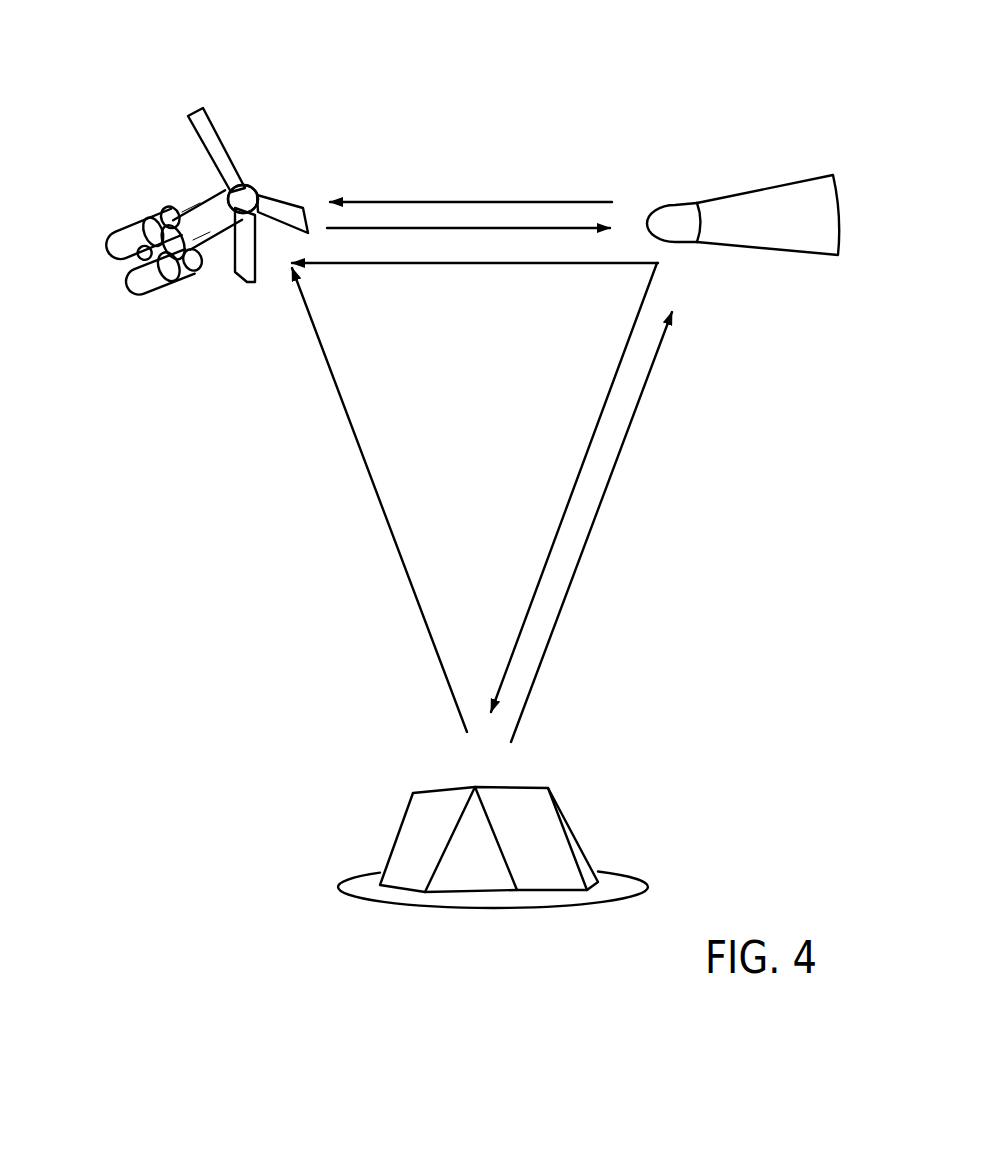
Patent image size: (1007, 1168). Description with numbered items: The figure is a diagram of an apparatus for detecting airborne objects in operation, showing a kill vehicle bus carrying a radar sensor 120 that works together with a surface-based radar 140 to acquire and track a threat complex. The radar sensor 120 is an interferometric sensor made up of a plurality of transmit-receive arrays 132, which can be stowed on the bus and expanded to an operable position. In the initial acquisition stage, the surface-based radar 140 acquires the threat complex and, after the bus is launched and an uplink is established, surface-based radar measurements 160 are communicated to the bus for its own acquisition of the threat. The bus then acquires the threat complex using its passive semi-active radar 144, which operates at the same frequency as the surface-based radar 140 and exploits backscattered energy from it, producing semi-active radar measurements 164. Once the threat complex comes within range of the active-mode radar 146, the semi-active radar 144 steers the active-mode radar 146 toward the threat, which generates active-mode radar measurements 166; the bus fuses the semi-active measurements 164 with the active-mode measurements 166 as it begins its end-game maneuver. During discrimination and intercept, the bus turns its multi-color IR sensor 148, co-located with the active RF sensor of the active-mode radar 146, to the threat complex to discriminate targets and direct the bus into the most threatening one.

The radar sensor 120 is at (210, 334).
The transmit-receive array 132 is at (216, 162).
The surface-based radar 140 is at (397, 828).
The semi-active radar 144 is at (272, 92).
The active-mode radar 146 is at (289, 176).
The multi-color IR sensor 148 is at (166, 78).
The surface-based radar measurements 160 is at (573, 577).
The semi-active radar measurements 164 is at (608, 402).
The active-mode radar measurements 166 is at (455, 199).